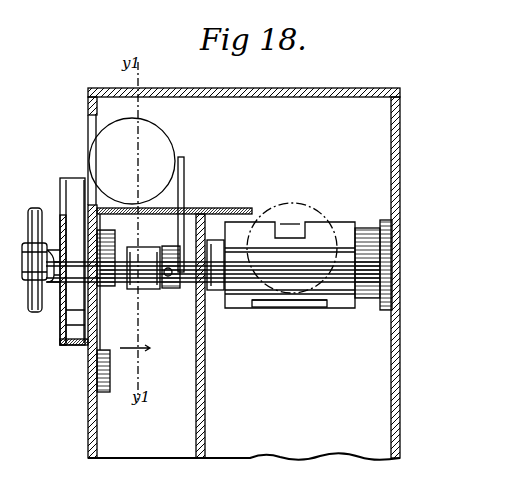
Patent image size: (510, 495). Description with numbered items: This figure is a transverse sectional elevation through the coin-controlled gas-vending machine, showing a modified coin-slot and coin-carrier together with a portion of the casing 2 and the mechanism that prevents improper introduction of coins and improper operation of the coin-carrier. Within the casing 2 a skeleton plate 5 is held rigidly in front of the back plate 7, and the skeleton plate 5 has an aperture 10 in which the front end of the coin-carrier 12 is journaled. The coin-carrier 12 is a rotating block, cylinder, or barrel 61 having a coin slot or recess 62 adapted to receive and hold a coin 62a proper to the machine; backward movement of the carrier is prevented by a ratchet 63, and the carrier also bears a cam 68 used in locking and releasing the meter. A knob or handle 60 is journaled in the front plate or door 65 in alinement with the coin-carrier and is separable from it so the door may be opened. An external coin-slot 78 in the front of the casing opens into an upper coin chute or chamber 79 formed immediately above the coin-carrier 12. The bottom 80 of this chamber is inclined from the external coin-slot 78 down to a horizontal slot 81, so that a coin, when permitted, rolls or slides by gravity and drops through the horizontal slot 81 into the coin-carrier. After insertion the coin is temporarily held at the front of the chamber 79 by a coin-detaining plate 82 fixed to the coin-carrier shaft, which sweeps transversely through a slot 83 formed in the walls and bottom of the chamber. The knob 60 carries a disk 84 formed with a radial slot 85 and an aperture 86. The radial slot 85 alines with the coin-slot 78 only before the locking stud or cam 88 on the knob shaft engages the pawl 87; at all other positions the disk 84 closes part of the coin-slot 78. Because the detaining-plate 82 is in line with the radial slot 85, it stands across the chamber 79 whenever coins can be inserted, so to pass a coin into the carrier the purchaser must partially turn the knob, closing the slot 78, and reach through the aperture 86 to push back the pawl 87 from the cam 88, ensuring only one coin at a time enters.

The casing 2 is at (244, 84).
The skeleton plate 5 is at (205, 375).
The back plate 7 is at (400, 350).
The aperture 10 is at (198, 288).
The coin-carrier 12 is at (215, 292).
The knob or handle 60 is at (28, 236).
The rotating block, cylinder, or barrel 61 is at (240, 300).
The coin slot or recess 62 is at (320, 300).
The coin 62a is at (330, 200).
The ratchet 63 is at (392, 232).
The front plate or door 65 is at (88, 438).
The cam 68 is at (364, 228).
The external coin-slot 78 is at (88, 126).
The upper coin chute or chamber 79 is at (274, 135).
The bottom of coin chute 80 is at (190, 210).
The horizontal slot 81 is at (287, 222).
The coin-detaining plate 82 is at (187, 216).
The slot 83 is at (176, 215).
The disk 84 is at (62, 320).
The radial slot 85 is at (60, 186).
The aperture 86 is at (44, 284).
The pawl 87 is at (110, 378).
The locking stud or cam 88 is at (112, 232).